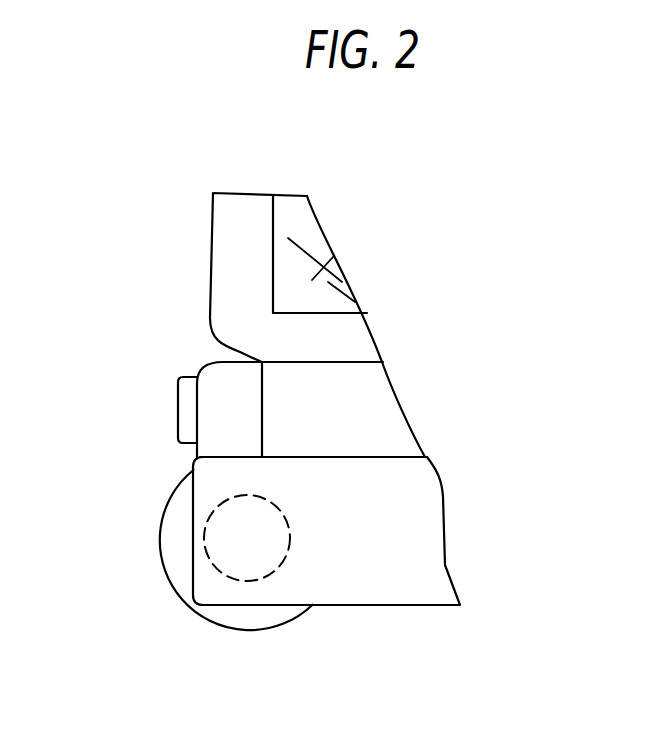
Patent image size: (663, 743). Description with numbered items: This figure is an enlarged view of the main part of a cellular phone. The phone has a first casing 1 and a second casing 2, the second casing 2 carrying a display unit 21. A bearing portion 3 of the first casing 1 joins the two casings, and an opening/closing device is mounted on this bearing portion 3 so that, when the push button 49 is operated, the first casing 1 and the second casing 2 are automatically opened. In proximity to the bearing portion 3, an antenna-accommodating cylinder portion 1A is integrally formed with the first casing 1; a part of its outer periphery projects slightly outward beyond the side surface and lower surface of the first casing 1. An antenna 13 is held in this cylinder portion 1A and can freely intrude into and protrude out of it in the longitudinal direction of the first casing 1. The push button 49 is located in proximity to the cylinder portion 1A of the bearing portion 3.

The first casing 1 is at (452, 556).
The cylinder portion 1A is at (207, 622).
The second casing 2 is at (262, 183).
The bearing portion 3 is at (243, 415).
The antenna 13 is at (283, 557).
The display unit 21 is at (338, 256).
The push button 49 is at (183, 403).